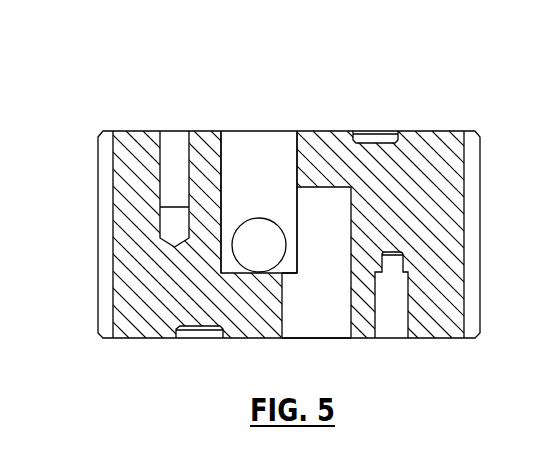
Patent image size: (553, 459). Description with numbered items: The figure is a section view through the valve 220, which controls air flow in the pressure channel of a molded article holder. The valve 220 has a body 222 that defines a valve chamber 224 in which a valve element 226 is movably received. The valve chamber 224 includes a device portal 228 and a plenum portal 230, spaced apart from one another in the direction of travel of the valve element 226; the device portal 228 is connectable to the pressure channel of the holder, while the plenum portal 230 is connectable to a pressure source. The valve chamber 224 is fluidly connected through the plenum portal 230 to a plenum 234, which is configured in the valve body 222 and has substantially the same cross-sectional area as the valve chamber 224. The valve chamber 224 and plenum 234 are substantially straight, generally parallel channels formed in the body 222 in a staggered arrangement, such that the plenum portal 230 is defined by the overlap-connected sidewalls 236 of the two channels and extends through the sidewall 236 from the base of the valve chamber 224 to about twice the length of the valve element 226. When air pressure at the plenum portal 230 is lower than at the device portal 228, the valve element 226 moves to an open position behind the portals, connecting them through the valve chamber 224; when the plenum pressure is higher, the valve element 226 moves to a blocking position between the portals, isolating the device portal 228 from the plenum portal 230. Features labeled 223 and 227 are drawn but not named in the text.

The valve 220 is at (447, 107).
The body 222 is at (457, 150).
The slot 223 is at (165, 138).
The valve chamber 224 is at (274, 174).
The valve element 226 is at (276, 257).
The pin 227 is at (377, 317).
The device portal 228 is at (230, 133).
The plenum portal 230 is at (298, 203).
The plenum 234 is at (338, 279).
The sidewall 236 is at (296, 136).